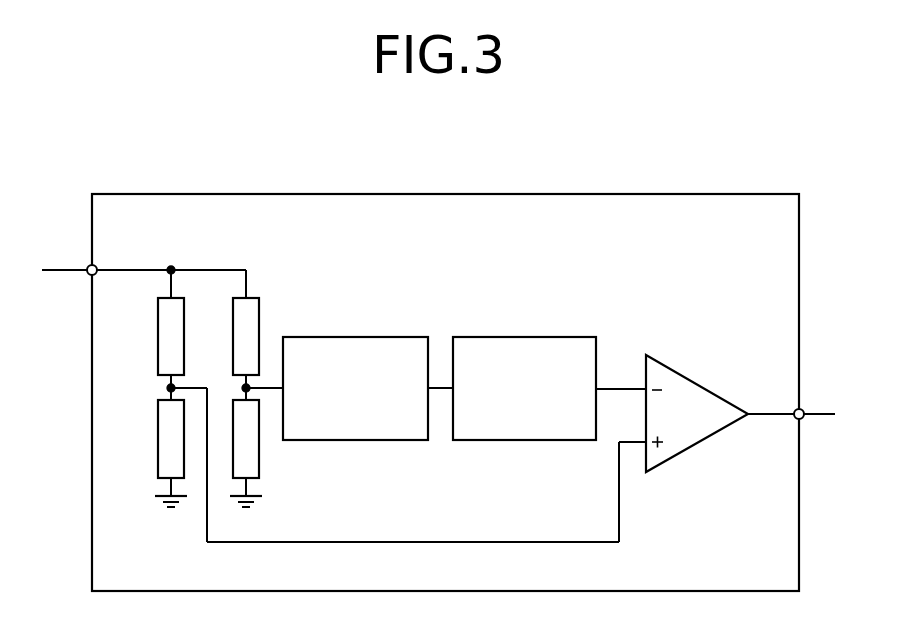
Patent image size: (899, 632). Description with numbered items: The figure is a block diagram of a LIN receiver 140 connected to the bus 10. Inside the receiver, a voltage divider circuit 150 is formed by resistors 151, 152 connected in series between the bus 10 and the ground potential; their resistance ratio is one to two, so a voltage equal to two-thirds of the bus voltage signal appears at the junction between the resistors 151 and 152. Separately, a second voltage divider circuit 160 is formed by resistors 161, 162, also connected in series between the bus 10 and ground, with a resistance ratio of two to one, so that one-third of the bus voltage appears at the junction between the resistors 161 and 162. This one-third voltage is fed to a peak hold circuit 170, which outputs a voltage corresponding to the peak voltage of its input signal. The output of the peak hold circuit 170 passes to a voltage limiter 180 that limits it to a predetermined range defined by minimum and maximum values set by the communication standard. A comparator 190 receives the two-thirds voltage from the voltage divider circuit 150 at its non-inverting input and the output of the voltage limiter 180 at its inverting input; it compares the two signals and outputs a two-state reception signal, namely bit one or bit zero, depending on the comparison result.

The bus 10 is at (53, 268).
The LIN receiver 140 is at (668, 193).
The voltage divider circuit 150 is at (142, 405).
The resistor 151 is at (157, 338).
The resistor 152 is at (157, 437).
The voltage divider circuit 160 is at (275, 358).
The resistor 161 is at (260, 310).
The resistor 162 is at (260, 468).
The peak hold circuit 170 is at (376, 336).
The voltage limiter 180 is at (525, 336).
The comparator 190 is at (705, 386).